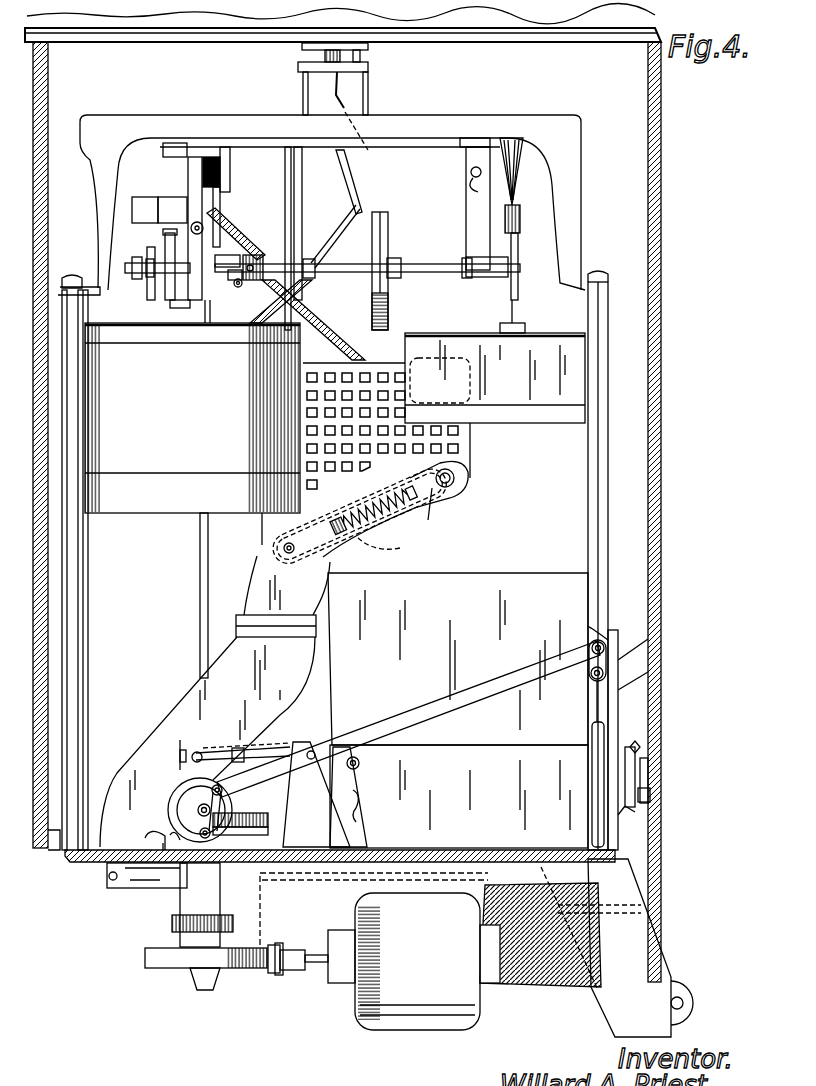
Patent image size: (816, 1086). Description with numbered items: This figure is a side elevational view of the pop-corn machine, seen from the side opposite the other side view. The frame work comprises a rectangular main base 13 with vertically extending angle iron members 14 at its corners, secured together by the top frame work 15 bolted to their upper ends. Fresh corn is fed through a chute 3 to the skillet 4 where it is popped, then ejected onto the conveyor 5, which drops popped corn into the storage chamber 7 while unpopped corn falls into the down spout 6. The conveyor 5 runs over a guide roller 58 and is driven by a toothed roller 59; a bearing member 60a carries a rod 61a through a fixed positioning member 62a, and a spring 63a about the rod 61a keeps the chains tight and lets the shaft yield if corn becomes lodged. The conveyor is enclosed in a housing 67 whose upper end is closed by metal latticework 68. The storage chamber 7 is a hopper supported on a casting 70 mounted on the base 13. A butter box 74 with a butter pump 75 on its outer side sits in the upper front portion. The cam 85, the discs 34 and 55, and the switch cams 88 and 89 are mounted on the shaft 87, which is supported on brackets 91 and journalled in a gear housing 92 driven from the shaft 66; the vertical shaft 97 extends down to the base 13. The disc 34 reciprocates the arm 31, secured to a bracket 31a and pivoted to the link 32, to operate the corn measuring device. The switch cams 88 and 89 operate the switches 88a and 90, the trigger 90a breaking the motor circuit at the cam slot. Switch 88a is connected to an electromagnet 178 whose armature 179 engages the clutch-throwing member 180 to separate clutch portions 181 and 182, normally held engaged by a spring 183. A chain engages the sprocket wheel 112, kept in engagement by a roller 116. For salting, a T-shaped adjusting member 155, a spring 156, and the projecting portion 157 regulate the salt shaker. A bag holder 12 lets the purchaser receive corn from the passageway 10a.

The chute 3 is at (324, 258).
The skillet 4 is at (175, 460).
The conveyor 5 is at (385, 549).
The down spout 6 is at (263, 690).
The storage chamber 7 is at (480, 665).
The passageway 10a is at (635, 1007).
The bag holder 12 is at (601, 947).
The main base 13 is at (82, 863).
The angle iron members 14 is at (75, 596).
The top frame work 15 is at (478, 118).
The arm 31 is at (345, 100).
The bracket 31a is at (351, 186).
The link 32 is at (347, 62).
The disc 34 is at (387, 220).
The disc 55 is at (303, 230).
The roller 58 is at (282, 548).
The roller 59 is at (452, 479).
The bearing member 60a is at (431, 488).
The rod 61a is at (428, 520).
The positioning member 62a is at (359, 516).
The spring 63a is at (458, 465).
The shaft 66 is at (205, 225).
The housing 67 is at (328, 483).
The metal latticework 68 is at (365, 376).
The casting 70 is at (540, 850).
The butter box 74 is at (521, 392).
The butter pump 75 is at (522, 328).
The cam 85 is at (515, 248).
The shaft 87 is at (420, 266).
The switch cam 88 is at (148, 286).
The switch 88a is at (147, 208).
The switch cam 89 is at (173, 308).
The switch 90 is at (185, 208).
The trigger 90a is at (167, 231).
The brackets 91 is at (198, 153).
The gear housing 92 is at (177, 317).
The vertically extending shaft 97 is at (203, 619).
The sprocket wheel 112 is at (302, 744).
The roller 116 is at (273, 747).
The T-shaped adjusting member 155 is at (641, 768).
The spring 156 is at (630, 753).
The projecting portion 157 is at (625, 807).
The electromagnet 178 is at (203, 163).
The armature 179 is at (228, 192).
The clutch-throwing member 180 is at (222, 238).
The clutch portion 181 is at (220, 307).
The clutch portion 182 is at (197, 313).
The spring 183 is at (248, 324).